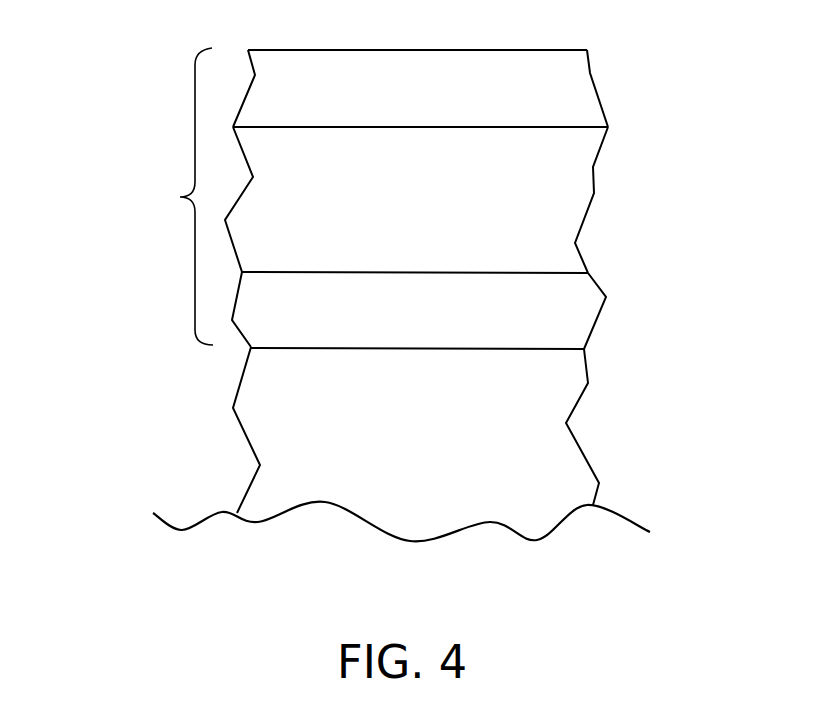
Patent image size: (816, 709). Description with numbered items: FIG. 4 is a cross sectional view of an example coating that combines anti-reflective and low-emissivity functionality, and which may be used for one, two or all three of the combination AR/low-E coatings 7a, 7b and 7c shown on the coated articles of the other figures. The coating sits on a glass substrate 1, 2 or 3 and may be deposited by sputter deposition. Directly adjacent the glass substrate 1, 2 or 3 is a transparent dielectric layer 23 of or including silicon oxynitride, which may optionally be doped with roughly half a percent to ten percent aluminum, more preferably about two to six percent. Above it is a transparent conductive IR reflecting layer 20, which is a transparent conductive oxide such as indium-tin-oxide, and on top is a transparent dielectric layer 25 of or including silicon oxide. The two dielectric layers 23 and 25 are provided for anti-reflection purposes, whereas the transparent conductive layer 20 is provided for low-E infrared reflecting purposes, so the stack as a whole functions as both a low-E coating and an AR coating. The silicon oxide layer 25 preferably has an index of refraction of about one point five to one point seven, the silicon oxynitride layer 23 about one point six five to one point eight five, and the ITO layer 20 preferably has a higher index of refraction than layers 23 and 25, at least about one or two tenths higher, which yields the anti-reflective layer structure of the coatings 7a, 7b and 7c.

The glass substrate 1 is at (421, 444).
The glass substrate 2 is at (421, 444).
The glass substrate 3 is at (548, 457).
The combination AR/low-E coating 7a is at (130, 196).
The combination AR/low-E coating 7b is at (130, 196).
The combination AR/low-E coating 7c is at (166, 194).
The transparent conductive IR reflecting layer 20 is at (553, 207).
The transparent dielectric layer 23 is at (563, 312).
The transparent dielectric layer 25 is at (563, 95).